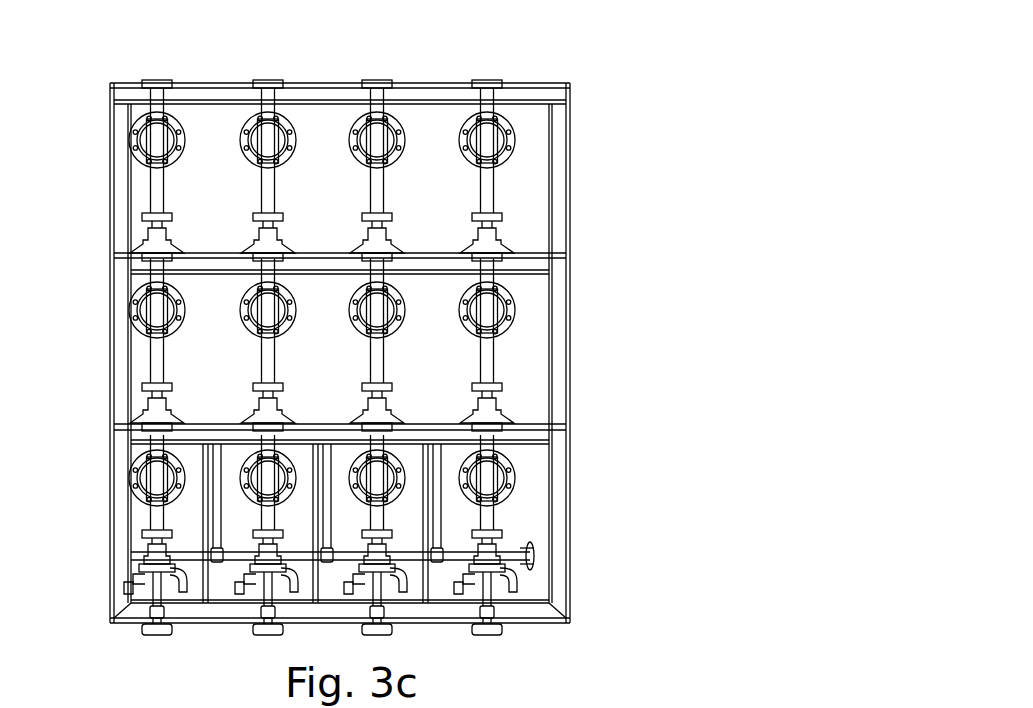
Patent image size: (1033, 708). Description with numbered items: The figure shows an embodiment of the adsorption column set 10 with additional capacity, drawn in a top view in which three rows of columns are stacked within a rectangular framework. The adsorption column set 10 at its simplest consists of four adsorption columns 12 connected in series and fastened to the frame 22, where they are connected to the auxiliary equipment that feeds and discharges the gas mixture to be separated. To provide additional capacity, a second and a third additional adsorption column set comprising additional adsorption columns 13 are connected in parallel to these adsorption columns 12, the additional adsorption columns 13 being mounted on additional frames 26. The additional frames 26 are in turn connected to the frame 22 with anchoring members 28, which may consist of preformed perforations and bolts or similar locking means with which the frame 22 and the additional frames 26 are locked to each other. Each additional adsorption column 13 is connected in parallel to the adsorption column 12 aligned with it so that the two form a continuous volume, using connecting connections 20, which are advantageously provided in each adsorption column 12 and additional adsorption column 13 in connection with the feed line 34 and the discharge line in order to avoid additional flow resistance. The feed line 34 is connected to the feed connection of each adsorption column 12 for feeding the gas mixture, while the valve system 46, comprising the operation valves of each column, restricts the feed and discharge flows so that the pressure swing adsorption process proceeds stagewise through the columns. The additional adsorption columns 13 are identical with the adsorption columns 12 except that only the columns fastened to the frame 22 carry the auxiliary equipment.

The adsorption column set 10 is at (450, 56).
The adsorption column 12 is at (393, 497).
The additional adsorption column 13 is at (283, 157).
The connecting connection 20 is at (220, 132).
The frame 22 is at (557, 545).
The additional frame 26 is at (560, 185).
The anchoring member 28 is at (577, 259).
The feed line 34 is at (270, 137).
The valve system 46 is at (88, 547).